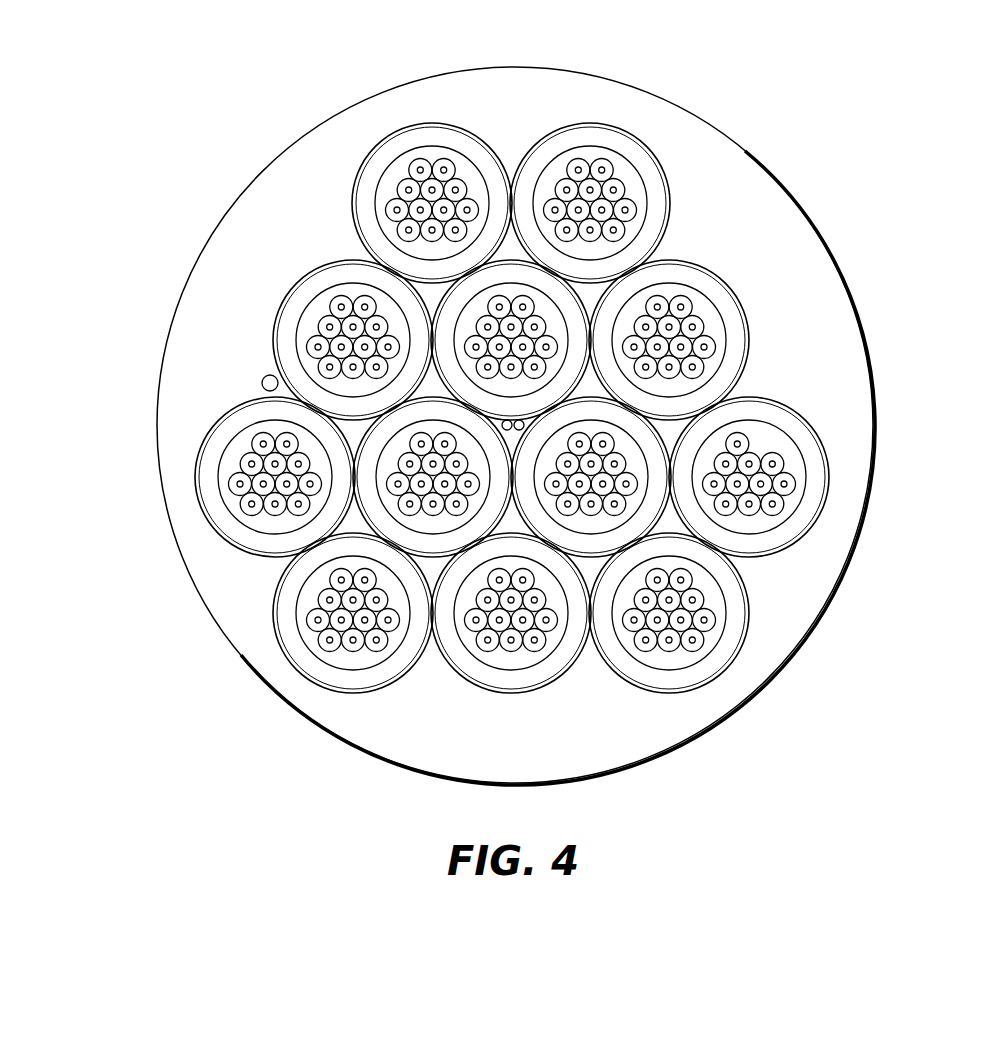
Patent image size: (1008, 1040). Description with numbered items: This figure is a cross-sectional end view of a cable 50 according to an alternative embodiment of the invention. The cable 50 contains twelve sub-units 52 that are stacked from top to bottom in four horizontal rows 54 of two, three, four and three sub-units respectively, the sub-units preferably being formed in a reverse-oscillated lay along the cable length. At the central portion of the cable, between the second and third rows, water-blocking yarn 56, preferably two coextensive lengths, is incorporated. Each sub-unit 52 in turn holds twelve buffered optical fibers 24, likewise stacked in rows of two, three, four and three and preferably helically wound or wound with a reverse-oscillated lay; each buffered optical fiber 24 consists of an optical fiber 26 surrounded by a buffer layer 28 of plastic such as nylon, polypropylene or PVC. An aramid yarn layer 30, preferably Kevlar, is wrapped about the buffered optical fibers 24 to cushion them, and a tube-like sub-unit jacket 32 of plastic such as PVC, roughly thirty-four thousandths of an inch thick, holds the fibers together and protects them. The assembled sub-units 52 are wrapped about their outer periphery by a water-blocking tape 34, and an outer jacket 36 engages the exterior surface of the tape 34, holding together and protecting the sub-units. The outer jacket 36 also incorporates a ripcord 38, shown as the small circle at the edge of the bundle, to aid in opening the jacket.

The cable 50 is at (486, 415).
The outer jacket 36 is at (381, 107).
The sub-unit 52 is at (471, 108).
The horizontal row 54 is at (275, 427).
The ripcord 38 is at (262, 381).
The buffered optical fiber 24 is at (802, 469).
The buffer layer 28 is at (781, 460).
The optical fiber 26 is at (786, 485).
The aramid yarn layer 30 is at (713, 597).
The sub-unit jacket 32 is at (530, 680).
The water-blocking tape 34 is at (313, 683).
The water-blocking yarn 56 is at (508, 448).